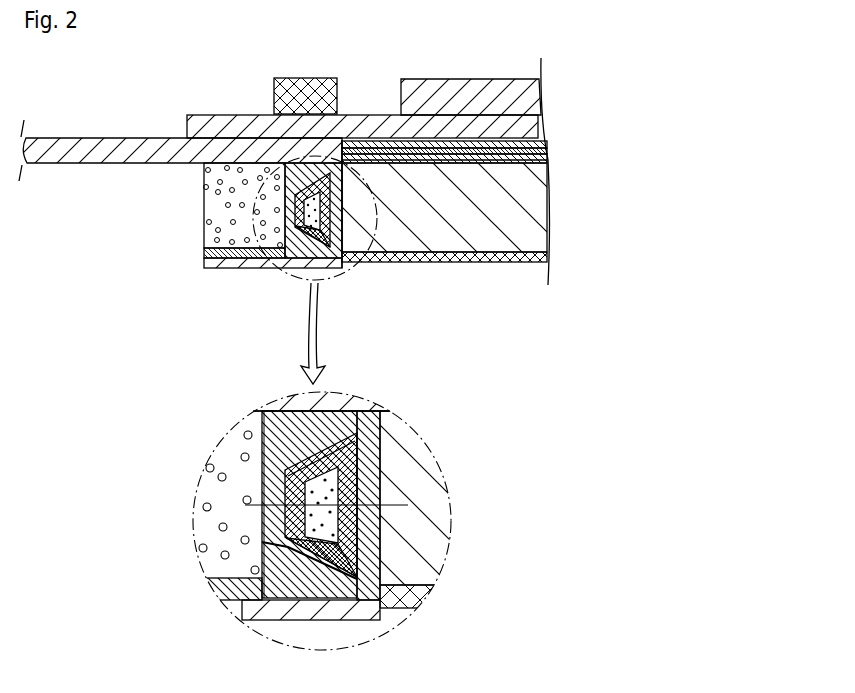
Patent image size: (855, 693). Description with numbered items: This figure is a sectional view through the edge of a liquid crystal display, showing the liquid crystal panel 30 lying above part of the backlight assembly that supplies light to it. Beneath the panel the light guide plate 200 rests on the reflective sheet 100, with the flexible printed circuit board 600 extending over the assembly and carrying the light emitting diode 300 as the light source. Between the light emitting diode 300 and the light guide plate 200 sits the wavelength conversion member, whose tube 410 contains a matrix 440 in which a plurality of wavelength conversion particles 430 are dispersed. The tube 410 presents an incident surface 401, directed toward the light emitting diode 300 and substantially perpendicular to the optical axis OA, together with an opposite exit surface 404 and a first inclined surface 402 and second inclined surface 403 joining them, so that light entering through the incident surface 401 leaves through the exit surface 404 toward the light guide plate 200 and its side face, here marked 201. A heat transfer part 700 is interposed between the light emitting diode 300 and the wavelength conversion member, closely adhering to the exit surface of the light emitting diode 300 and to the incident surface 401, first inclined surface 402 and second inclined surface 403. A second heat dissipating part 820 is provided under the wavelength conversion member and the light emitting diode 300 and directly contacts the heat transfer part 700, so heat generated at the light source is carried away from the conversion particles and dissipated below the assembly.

The liquid crystal panel 30 is at (464, 92).
The reflective sheet 100 is at (481, 263).
The light guide plate 200 is at (418, 230).
The display panel side layer 201 is at (378, 452).
The light emitting diode 300 is at (204, 184).
The incident surface 401 is at (275, 528).
The first inclined surface 402 is at (290, 420).
The second inclined surface 403 is at (315, 556).
The exit surface 404 is at (333, 541).
The tube 410 is at (261, 600).
The wavelength conversion particles 430 is at (272, 211).
The matrix 440 is at (350, 531).
The flexible printed circuit board 600 is at (128, 136).
The heat transfer part 700 is at (285, 236).
The second heat dissipating part 820 is at (204, 266).
The optical axis OA is at (339, 505).